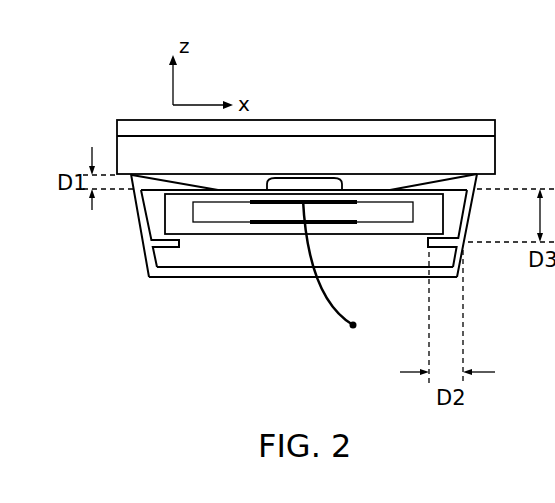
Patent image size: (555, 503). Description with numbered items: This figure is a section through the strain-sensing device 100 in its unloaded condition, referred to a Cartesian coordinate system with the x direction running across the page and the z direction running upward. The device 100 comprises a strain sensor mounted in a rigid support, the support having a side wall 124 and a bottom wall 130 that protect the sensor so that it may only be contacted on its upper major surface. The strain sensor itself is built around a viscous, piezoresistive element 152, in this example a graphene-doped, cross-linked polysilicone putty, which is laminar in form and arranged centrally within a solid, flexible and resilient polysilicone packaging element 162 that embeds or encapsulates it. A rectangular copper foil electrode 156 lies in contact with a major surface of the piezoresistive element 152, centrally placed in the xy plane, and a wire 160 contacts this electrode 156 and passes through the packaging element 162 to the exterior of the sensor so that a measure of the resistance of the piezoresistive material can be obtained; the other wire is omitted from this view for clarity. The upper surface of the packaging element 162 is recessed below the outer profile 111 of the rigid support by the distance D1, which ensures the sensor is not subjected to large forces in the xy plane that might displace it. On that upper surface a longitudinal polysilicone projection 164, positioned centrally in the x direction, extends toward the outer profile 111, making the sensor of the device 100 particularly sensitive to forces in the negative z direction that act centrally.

The strain-sensing device 100 is at (109, 345).
The outer profile 111 is at (108, 177).
The side wall 124 is at (140, 232).
The bottom wall 130 is at (377, 278).
The viscous, piezoresistive element 152 is at (207, 213).
The electrode 156 is at (273, 221).
The wire 160 is at (340, 328).
The packaging element 162 is at (193, 234).
The projection 164 is at (305, 177).